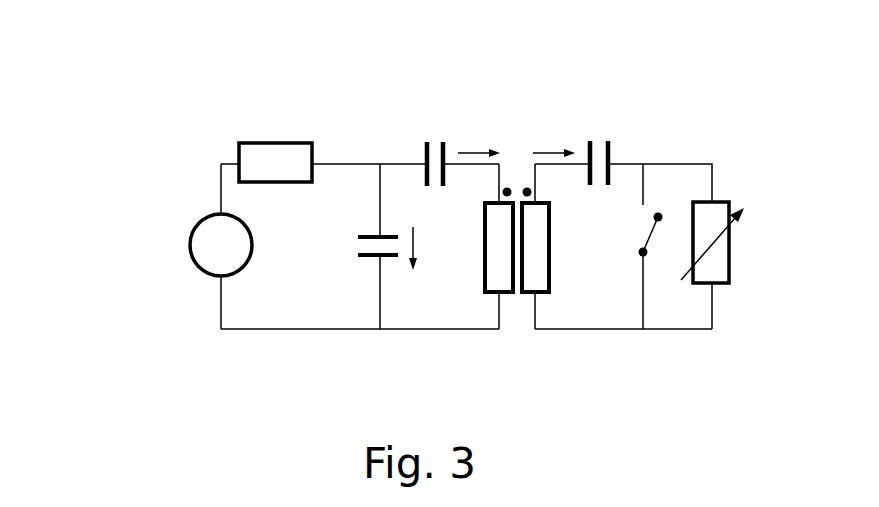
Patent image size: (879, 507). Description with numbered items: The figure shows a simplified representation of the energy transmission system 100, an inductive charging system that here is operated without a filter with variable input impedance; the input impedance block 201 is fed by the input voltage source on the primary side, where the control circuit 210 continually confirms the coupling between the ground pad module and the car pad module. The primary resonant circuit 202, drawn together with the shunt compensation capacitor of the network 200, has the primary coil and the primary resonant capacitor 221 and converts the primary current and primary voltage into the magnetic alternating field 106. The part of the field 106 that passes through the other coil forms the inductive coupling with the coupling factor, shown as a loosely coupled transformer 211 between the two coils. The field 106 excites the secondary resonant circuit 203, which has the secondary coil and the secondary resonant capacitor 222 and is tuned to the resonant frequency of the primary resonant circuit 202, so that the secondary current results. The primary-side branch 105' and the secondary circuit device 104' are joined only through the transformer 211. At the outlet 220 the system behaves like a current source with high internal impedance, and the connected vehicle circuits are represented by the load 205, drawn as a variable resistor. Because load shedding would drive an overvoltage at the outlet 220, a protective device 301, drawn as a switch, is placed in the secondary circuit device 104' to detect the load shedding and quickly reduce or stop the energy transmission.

The energy transmission system 100 is at (202, 78).
The control circuit 210 is at (124, 125).
The input impedance Zin 201 is at (266, 114).
The compensation capacitor / resonant network 200 is at (368, 125).
The primary resonant capacitor 221 is at (445, 129).
The primary resonant circuit 202 is at (455, 293).
The magnetic alternating field 106 is at (520, 129).
The loosely coupled transformer 211 is at (517, 192).
The secondary resonant circuit 203 is at (574, 299).
The secondary resonant capacitor 222 is at (610, 122).
The outlet 220 is at (739, 118).
The protective device 301 is at (643, 200).
The load 205 is at (732, 200).
The primary side circuit branch 105' is at (360, 374).
The secondary circuit device 104' is at (653, 380).